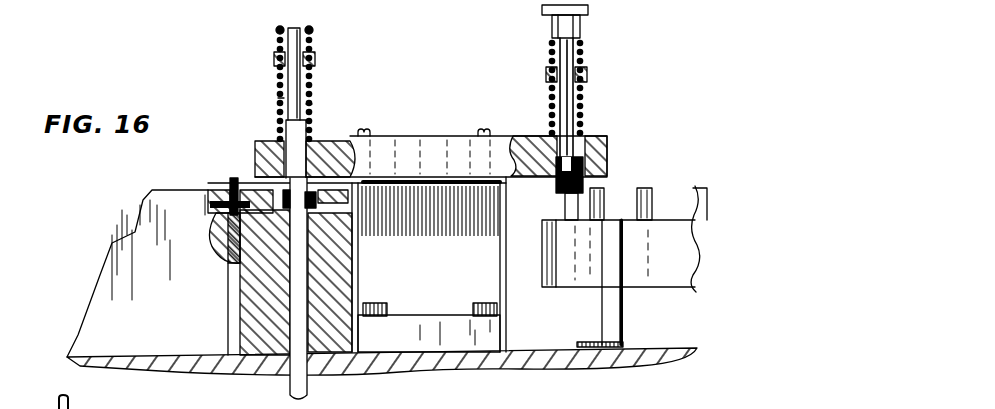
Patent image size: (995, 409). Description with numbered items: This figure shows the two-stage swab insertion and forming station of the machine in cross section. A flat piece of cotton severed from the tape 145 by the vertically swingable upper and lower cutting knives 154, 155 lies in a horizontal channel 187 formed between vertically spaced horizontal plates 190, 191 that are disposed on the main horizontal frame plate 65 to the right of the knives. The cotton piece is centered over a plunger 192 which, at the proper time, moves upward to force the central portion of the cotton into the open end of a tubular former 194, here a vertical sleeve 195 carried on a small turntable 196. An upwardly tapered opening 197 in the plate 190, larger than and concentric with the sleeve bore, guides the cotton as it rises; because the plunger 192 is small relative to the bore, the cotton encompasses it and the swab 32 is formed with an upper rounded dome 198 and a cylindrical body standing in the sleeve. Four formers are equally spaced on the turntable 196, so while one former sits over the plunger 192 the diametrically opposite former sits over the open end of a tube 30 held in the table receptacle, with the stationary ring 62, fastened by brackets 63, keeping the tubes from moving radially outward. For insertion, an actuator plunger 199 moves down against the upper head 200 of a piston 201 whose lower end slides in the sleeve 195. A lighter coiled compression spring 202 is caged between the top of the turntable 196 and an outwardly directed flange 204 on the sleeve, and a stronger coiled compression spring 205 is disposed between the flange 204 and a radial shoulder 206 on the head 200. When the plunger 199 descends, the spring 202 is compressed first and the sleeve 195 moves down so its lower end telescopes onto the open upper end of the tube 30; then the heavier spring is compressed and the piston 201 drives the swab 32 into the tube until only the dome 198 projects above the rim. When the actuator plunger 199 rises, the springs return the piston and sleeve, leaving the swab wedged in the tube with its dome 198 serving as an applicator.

The tube 30 is at (567, 207).
The swab 32 is at (584, 185).
The stationary ring 62 is at (557, 283).
The bracket 63 is at (623, 305).
The main horizontal frame plate 65 is at (646, 351).
The flat tape 145 is at (213, 240).
The upper cutting knife 154 is at (229, 180).
The lower cutting knife 155 is at (227, 272).
The horizontal channel 187 is at (355, 243).
The upper horizontal plate 190 is at (243, 188).
The lower horizontal plate 191 is at (250, 272).
The plunger 192 is at (298, 294).
The tubular former 194 is at (320, 104).
The vertical sleeve 195 is at (314, 88).
The small turntable 196 is at (341, 138).
The upwardly tapered opening 197 is at (344, 192).
The upper rounded dome 198 is at (322, 160).
The actuator plunger 199 is at (590, 9).
The upper head 200 is at (552, 32).
The piston 201 is at (587, 73).
The coiled compression spring 202 is at (278, 98).
The outwardly directed flange 204 is at (275, 60).
The stronger coiled compression spring 205 is at (278, 36).
The radial shoulder 206 is at (547, 60).